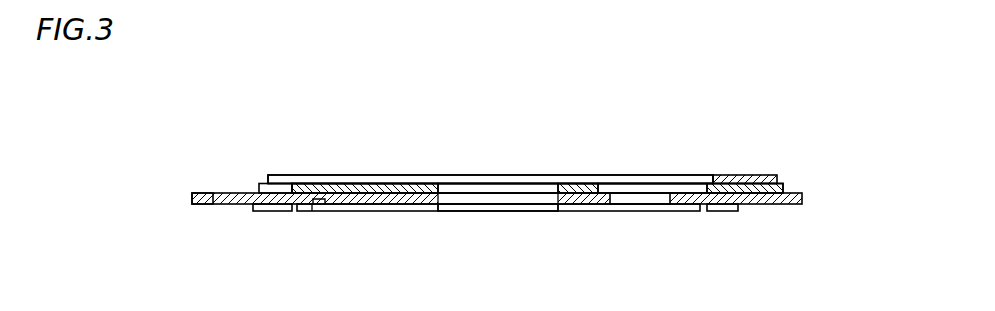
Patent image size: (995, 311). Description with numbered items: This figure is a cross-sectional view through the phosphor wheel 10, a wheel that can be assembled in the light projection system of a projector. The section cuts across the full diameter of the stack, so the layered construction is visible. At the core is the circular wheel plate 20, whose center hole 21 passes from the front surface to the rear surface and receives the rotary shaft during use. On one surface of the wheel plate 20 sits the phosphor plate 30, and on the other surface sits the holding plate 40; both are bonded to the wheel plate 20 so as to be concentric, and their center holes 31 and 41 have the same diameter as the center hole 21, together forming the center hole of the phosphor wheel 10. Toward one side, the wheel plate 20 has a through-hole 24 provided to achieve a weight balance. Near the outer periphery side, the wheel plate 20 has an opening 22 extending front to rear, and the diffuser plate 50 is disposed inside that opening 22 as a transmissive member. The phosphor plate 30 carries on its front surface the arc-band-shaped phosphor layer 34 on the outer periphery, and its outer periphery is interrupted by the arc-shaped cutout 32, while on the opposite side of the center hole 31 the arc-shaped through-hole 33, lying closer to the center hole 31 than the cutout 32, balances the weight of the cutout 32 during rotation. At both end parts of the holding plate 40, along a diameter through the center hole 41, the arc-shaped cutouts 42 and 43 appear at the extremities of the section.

The phosphor wheel 10 is at (729, 117).
The wheel plate 20 is at (803, 199).
The center hole 21 is at (537, 149).
The opening 22 is at (318, 206).
The through-hole 24 is at (651, 231).
The phosphor plate 30 is at (782, 185).
The center hole 31 is at (498, 150).
The cutout 32 is at (233, 174).
The through-hole 33 is at (652, 155).
The phosphor layer 34 is at (313, 175).
The holding plate 40 is at (740, 208).
The center hole 41 is at (543, 208).
The cutout 42 is at (268, 212).
The cutout 43 is at (722, 212).
The diffuser plate 50 is at (217, 212).